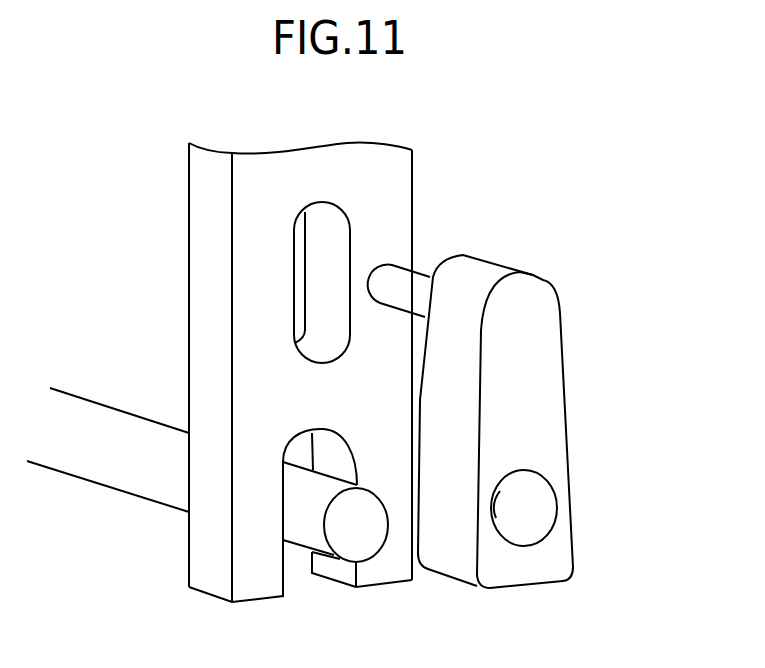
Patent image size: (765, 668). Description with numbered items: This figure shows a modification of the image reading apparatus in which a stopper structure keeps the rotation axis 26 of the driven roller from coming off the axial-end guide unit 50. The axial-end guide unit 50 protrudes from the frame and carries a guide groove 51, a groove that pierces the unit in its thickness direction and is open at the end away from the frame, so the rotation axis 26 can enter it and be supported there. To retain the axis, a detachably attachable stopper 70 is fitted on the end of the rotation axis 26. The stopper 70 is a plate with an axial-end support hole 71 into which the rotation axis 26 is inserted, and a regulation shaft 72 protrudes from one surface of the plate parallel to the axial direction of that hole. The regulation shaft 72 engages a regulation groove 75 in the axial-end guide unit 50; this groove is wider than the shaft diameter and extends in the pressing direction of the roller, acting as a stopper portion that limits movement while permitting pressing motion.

The rotation axis 26 is at (140, 477).
The axial-end guide unit 50 is at (213, 310).
The guide groove 51 is at (335, 570).
The stopper 70 is at (570, 407).
The axial-end support hole 71 is at (531, 496).
The regulation shaft 72 is at (420, 273).
The regulation groove 75 is at (333, 227).